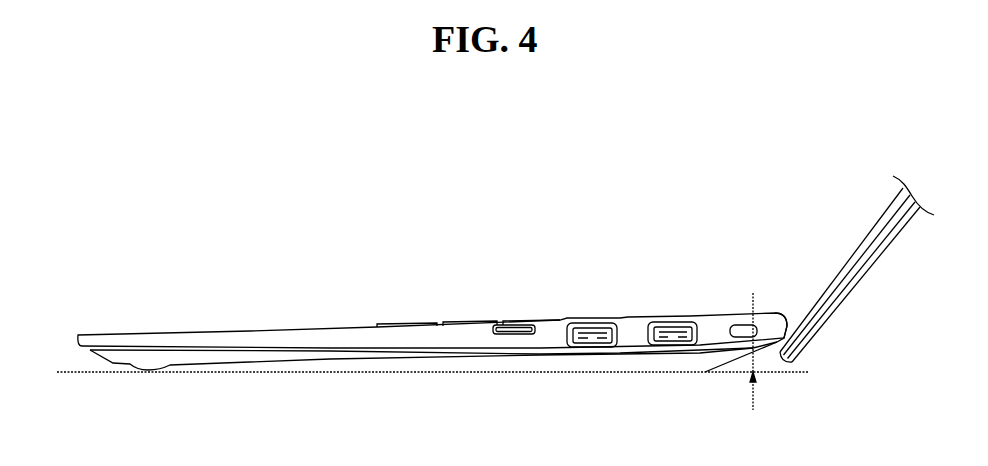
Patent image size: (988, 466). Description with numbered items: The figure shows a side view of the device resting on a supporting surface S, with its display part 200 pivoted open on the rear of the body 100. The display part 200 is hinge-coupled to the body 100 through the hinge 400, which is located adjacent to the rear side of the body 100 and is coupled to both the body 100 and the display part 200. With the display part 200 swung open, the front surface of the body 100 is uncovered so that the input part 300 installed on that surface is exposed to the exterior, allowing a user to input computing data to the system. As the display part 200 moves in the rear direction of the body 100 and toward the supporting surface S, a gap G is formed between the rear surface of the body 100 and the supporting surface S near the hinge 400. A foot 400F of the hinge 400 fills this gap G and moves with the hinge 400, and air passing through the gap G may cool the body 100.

The body 100 is at (290, 338).
The display part 200 is at (868, 248).
The input part 300 is at (445, 290).
The hinge 400 is at (765, 353).
The foot 400F is at (705, 352).
The supporting surface S is at (423, 373).
The gap G is at (758, 351).